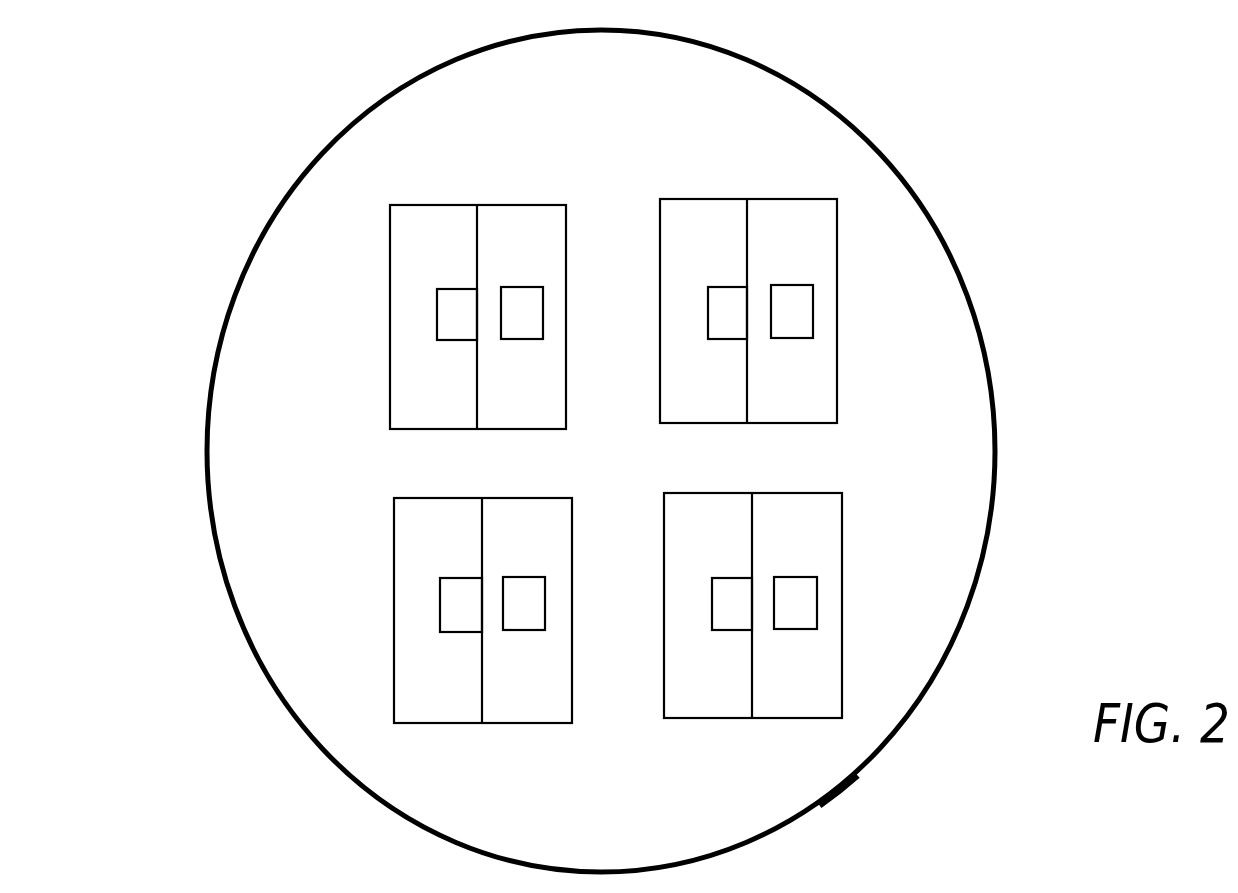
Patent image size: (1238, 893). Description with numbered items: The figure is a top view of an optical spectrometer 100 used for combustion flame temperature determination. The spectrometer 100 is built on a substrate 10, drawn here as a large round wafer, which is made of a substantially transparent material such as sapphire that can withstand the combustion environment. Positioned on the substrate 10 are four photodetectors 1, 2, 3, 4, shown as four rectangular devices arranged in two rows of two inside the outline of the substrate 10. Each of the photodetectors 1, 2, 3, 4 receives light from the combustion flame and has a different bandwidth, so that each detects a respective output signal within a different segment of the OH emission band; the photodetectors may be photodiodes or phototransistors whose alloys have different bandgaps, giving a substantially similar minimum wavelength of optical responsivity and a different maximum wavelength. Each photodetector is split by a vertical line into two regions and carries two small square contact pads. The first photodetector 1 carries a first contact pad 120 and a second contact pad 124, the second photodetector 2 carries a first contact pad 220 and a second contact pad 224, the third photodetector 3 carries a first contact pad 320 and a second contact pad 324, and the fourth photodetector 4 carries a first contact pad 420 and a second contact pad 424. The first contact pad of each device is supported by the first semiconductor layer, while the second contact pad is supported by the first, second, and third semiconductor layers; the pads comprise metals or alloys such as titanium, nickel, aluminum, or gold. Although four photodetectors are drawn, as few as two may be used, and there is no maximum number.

The optical spectrometer 100 is at (305, 142).
The substrate 10 is at (833, 788).
The photodetector 1 is at (390, 537).
The photodetector 2 is at (659, 490).
The photodetector 3 is at (475, 202).
The photodetector 4 is at (746, 192).
The first contact pad 120 is at (522, 577).
The second contact pad 124 is at (459, 578).
The first contact pad 220 is at (794, 577).
The second contact pad 224 is at (730, 578).
The first contact pad 320 is at (520, 287).
The second contact pad 324 is at (455, 289).
The first contact pad 420 is at (790, 285).
The second contact pad 424 is at (726, 287).